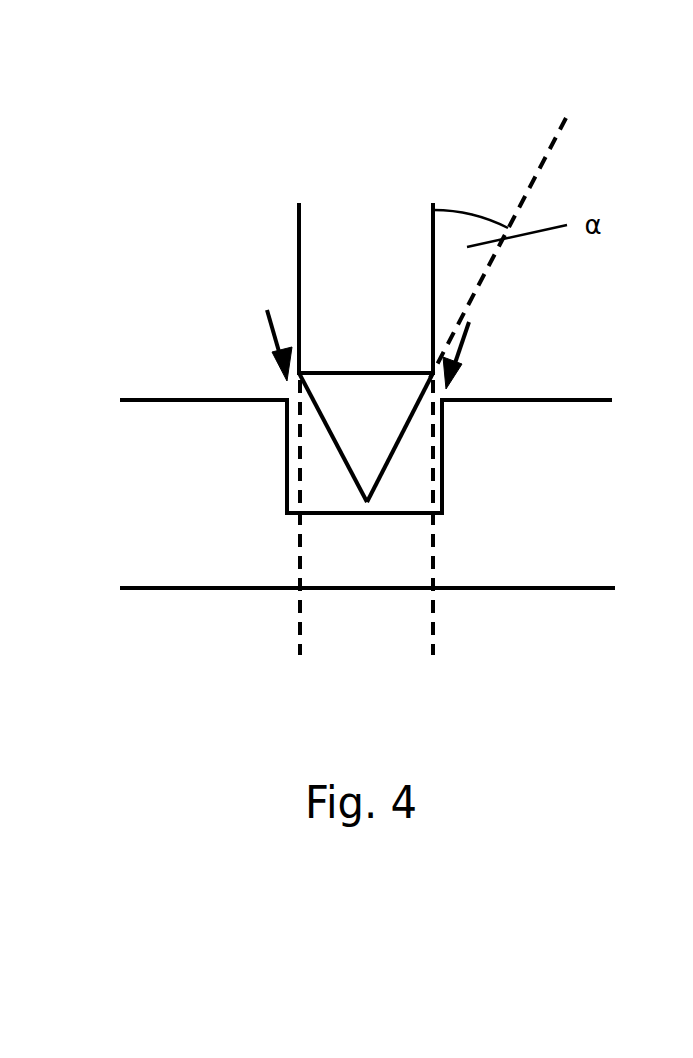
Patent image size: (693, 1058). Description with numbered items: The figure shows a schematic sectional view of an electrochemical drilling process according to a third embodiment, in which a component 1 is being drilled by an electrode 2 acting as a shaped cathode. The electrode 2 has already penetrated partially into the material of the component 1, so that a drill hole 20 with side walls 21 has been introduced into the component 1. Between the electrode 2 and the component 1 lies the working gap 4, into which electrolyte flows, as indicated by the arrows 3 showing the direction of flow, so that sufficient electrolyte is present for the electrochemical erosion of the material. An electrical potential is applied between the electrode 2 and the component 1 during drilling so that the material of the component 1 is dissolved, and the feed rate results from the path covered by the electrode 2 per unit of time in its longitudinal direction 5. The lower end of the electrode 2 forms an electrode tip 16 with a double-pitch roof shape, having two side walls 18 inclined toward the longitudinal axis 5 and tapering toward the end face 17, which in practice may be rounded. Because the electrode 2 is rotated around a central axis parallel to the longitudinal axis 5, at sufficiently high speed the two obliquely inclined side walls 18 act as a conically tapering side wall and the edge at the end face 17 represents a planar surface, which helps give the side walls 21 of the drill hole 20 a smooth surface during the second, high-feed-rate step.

The component 1 is at (513, 453).
The electrode 2 is at (345, 240).
The gas flow direction 3 is at (267, 318).
The working gap 4 is at (412, 493).
The longitudinal direction 5 is at (437, 623).
The electrode tip 16 is at (358, 437).
The end face 17 is at (367, 503).
The side walls 18 is at (333, 437).
The drill hole 20 is at (287, 515).
The side walls 21 is at (287, 442).